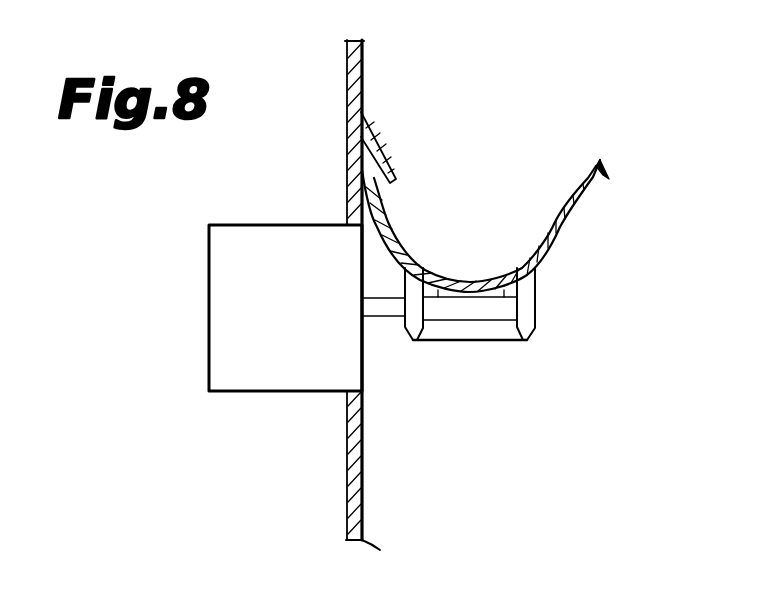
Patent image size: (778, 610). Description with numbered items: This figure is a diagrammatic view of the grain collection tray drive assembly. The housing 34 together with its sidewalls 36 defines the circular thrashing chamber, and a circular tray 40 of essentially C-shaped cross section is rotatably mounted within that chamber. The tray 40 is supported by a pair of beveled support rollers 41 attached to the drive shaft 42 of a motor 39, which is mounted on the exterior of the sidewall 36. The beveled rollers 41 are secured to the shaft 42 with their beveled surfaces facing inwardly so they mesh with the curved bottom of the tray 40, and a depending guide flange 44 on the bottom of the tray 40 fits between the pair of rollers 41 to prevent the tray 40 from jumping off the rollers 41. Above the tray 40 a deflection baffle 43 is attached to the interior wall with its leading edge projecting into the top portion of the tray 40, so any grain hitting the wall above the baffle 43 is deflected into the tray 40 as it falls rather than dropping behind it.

The housing 34 is at (338, 60).
The sidewalls 36 is at (363, 470).
The motor 39 is at (290, 313).
The circular tray 40 is at (605, 172).
The beveled support rollers 41 is at (412, 287).
The drive shaft 42 is at (385, 313).
The deflection baffle 43 is at (370, 133).
The guide flange 44 is at (517, 287).